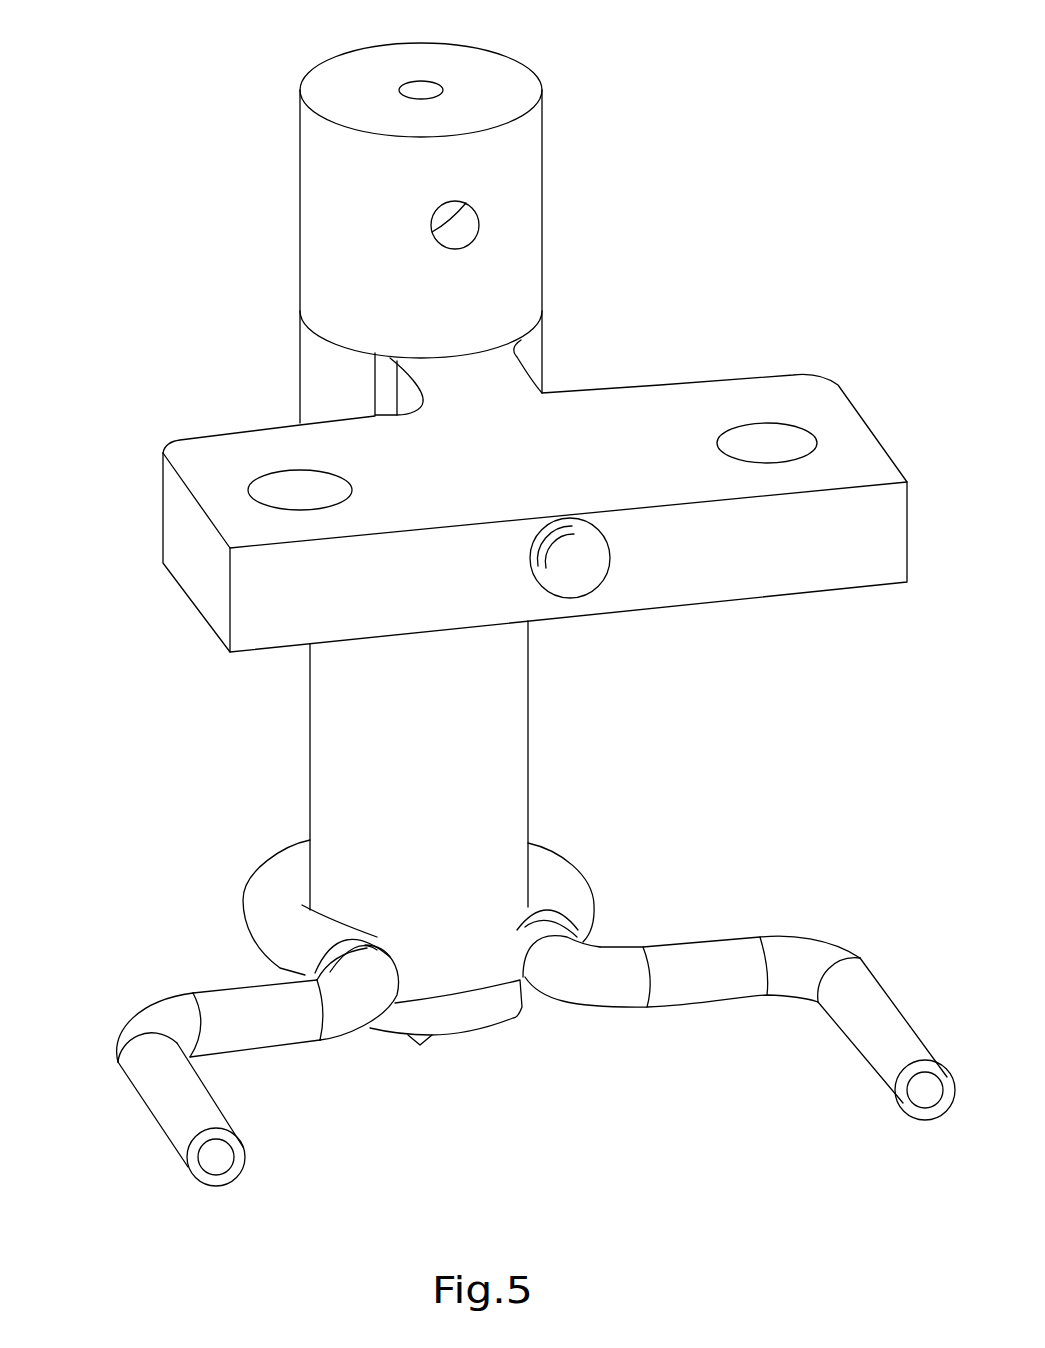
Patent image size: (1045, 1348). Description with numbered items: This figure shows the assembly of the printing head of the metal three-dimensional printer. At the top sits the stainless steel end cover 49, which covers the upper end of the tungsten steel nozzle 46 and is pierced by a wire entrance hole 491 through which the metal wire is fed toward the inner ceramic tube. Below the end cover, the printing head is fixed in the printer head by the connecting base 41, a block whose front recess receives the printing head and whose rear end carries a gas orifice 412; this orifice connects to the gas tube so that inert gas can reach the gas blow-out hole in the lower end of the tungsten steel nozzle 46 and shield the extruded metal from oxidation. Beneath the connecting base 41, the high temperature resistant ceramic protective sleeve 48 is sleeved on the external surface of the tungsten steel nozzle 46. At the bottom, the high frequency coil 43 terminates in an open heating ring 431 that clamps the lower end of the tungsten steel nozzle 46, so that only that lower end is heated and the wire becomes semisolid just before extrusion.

The connecting base 41 is at (325, 373).
The gas orifice 412 is at (563, 555).
The high frequency coil 43 is at (188, 1010).
The open heating ring 431 is at (258, 902).
The tungsten steel nozzle 46 is at (497, 1017).
The high temperature resistant ceramic protective sleeve 48 is at (335, 722).
The stainless steel end cover 49 is at (353, 211).
The wire entrance hole 491 is at (413, 90).